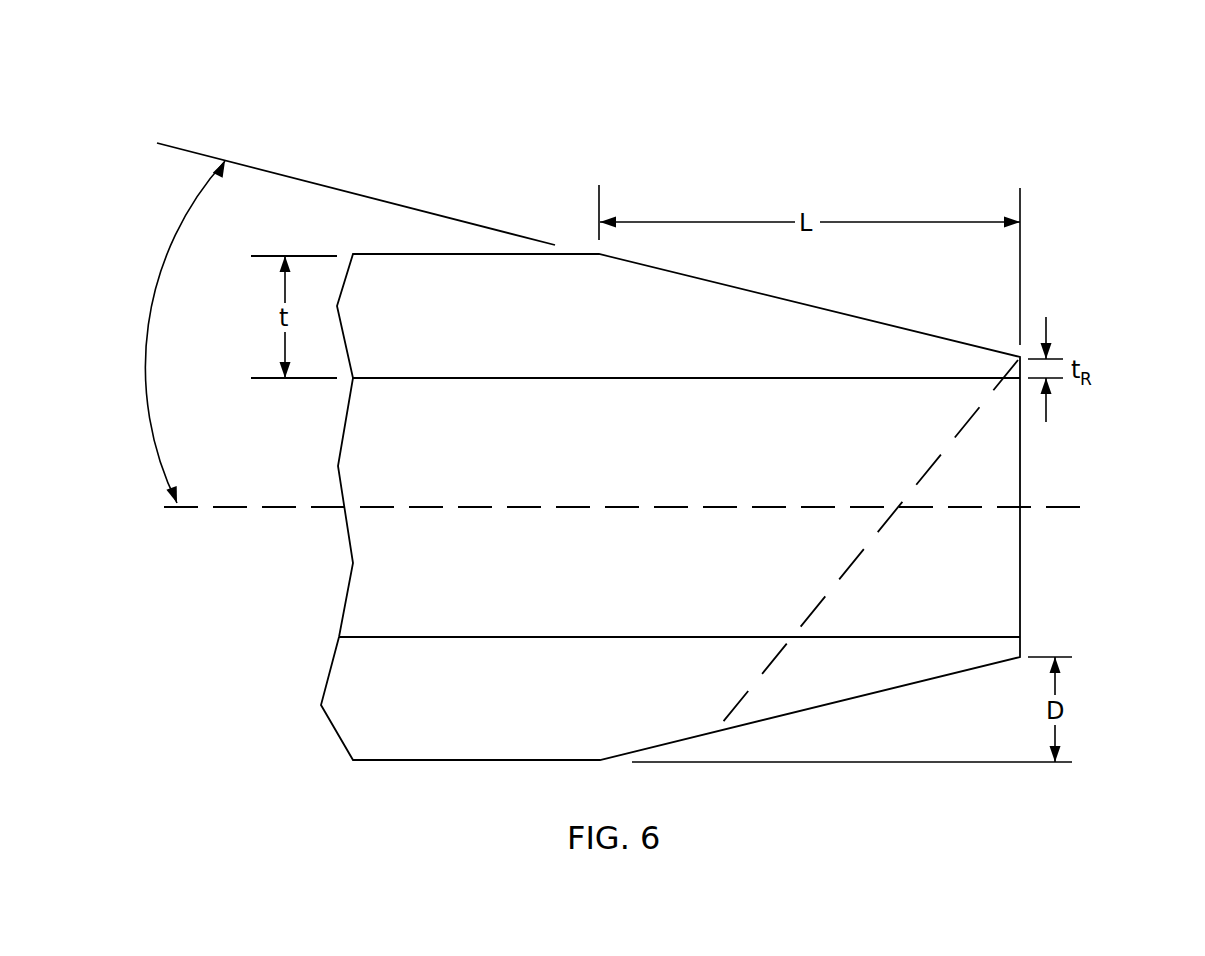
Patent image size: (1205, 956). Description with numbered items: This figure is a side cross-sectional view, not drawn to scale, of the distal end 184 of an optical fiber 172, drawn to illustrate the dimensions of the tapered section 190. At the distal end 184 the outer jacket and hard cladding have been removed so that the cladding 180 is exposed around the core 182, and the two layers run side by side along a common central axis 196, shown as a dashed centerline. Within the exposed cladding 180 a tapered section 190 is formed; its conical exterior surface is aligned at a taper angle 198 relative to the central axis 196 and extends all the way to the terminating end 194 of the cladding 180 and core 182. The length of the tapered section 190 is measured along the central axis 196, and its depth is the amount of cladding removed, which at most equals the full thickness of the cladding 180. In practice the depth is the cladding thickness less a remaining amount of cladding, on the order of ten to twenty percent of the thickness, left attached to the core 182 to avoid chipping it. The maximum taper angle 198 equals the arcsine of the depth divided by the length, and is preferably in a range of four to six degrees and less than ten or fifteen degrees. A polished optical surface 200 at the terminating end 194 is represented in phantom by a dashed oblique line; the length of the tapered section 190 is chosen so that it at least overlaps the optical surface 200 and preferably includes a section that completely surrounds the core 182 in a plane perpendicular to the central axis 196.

The optical fiber 172 is at (987, 109).
The cladding 180 is at (337, 676).
The core 182 is at (367, 589).
The distal end 184 is at (387, 742).
The tapered section 190 is at (1088, 222).
The terminating end 194 is at (1022, 637).
The central axis 196 is at (227, 507).
The taper angle 198 is at (147, 315).
The polished optical surface 200 is at (858, 550).